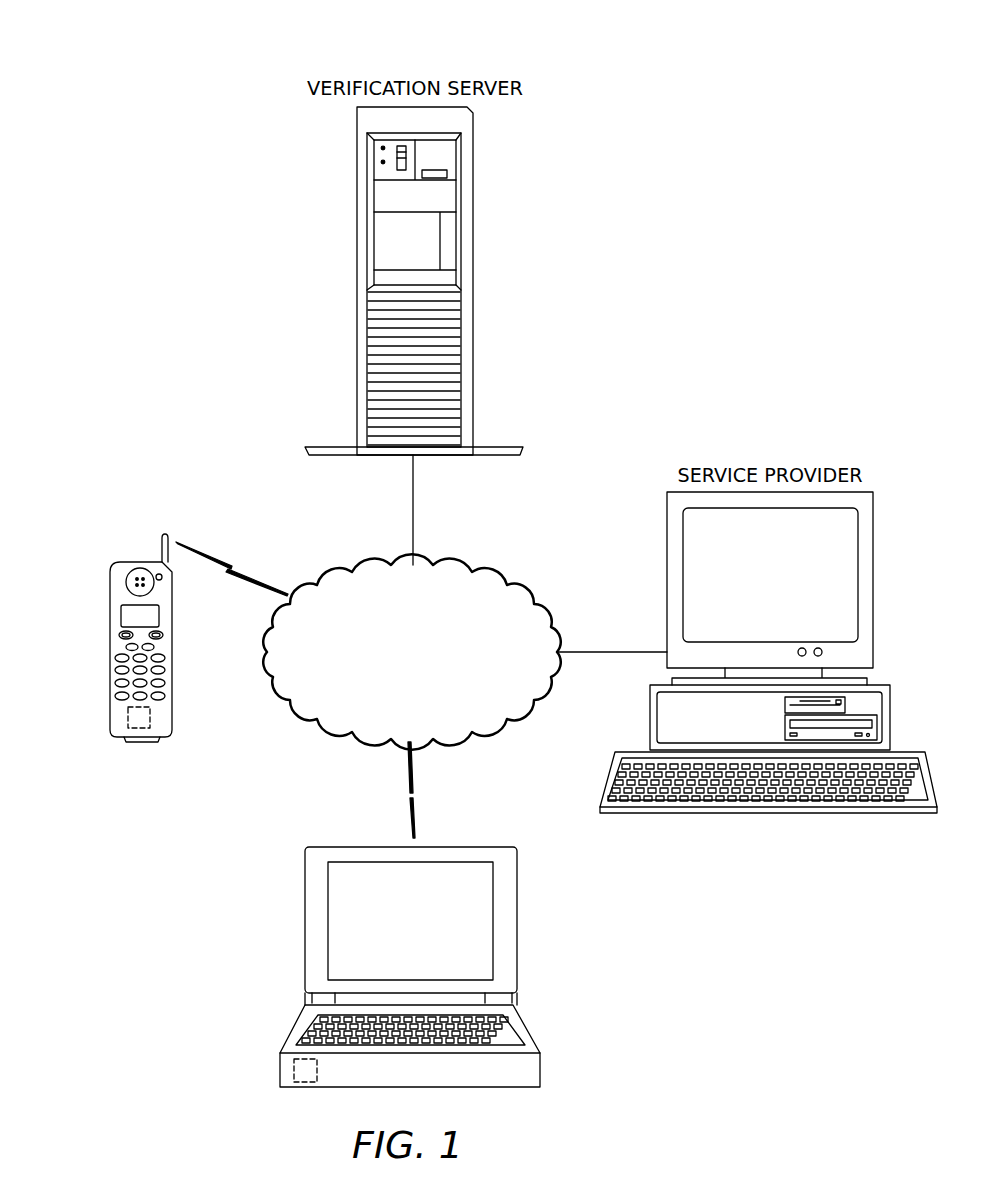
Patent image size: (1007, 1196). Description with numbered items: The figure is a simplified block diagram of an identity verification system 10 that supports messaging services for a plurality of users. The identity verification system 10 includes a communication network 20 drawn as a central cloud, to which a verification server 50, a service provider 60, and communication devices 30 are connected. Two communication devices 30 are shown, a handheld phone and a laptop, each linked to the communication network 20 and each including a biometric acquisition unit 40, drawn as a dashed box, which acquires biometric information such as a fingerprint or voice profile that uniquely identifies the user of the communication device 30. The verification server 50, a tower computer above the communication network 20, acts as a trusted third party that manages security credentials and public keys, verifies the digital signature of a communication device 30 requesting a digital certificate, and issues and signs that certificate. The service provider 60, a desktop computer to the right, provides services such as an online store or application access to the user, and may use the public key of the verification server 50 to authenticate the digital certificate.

The identity verification system 10 is at (205, 878).
The communication network 20 is at (426, 664).
The communication device 30 is at (110, 617).
The biometric acquisition unit 40 is at (112, 715).
The verification server 50 is at (357, 284).
The service provider 60 is at (770, 814).